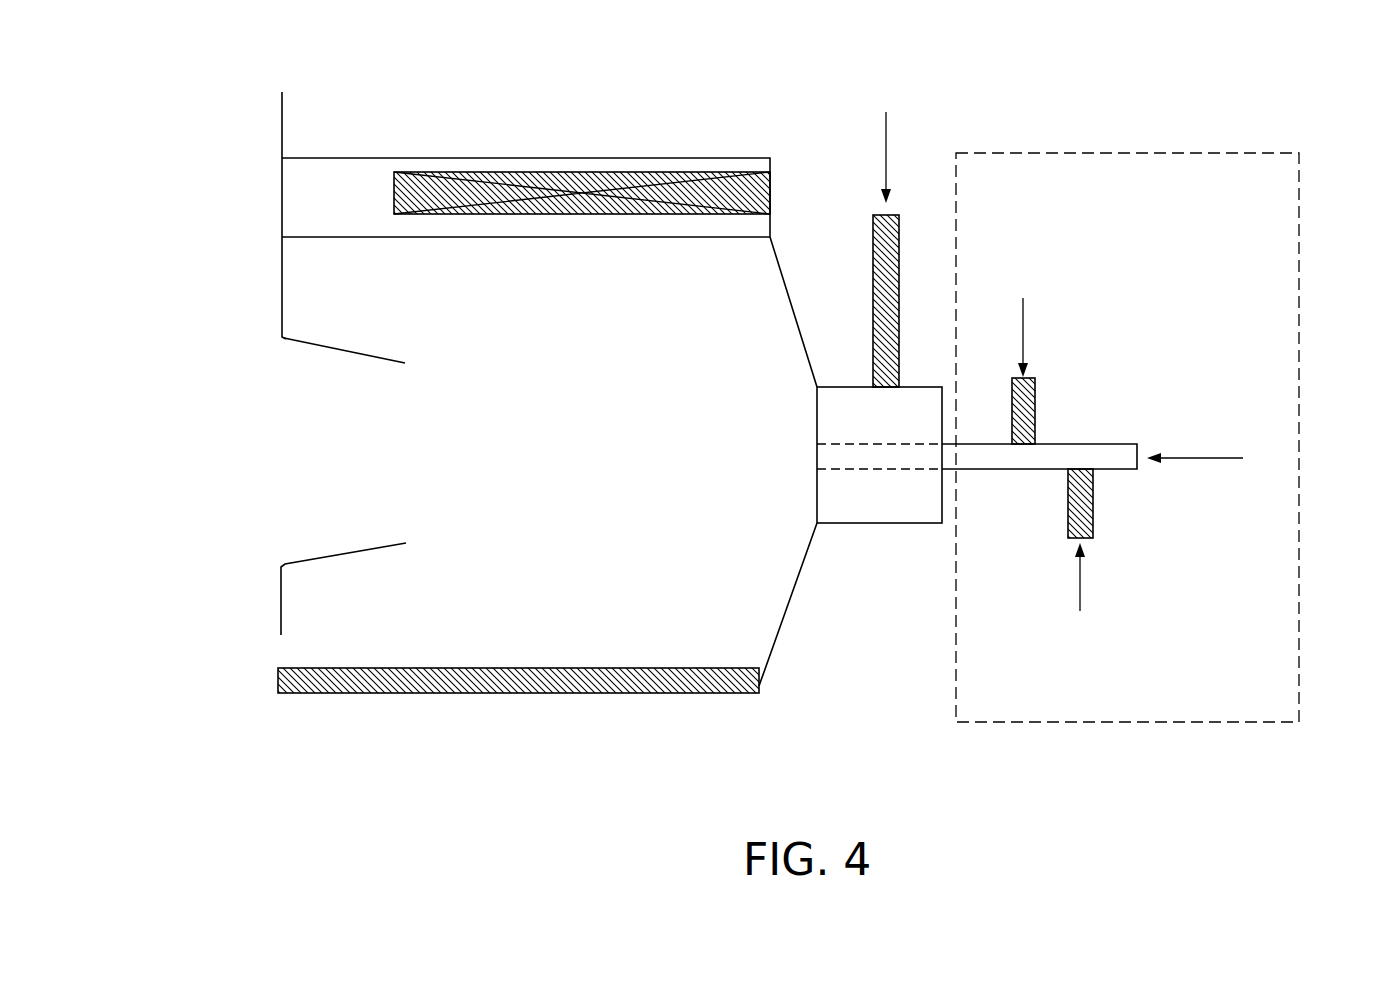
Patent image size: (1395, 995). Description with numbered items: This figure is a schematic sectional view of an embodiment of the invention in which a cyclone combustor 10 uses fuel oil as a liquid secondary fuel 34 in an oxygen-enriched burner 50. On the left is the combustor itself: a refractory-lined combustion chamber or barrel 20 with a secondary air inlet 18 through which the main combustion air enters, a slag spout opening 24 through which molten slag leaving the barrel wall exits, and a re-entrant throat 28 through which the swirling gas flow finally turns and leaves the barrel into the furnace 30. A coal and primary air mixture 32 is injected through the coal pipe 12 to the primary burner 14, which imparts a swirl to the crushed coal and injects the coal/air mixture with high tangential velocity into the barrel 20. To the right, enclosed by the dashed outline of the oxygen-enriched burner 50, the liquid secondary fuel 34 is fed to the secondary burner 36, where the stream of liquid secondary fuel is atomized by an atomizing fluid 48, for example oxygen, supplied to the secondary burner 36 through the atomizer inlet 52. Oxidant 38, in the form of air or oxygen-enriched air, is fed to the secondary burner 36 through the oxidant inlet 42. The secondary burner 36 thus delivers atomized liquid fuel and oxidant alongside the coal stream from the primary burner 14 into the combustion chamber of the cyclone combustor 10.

The cyclone combustor 10 is at (662, 106).
The coal pipe 12 is at (872, 277).
The burner 14 is at (860, 524).
The secondary air inlet 18 is at (433, 193).
The barrel 20 is at (506, 678).
The slag spout opening 24 is at (280, 648).
The re-entrant throat 28 is at (323, 333).
The furnace 30 is at (178, 428).
The coal and primary air mixture 32 is at (886, 140).
The liquid secondary fuel 34 is at (1200, 458).
The secondary burner 36 is at (1115, 472).
The oxidant 38 is at (1023, 325).
The oxidant inlet 42 is at (1035, 410).
The atomizing fluid 48 is at (1080, 590).
The oxygen-enriched burner 50 is at (1300, 235).
The atomizer inlet 52 is at (1068, 497).